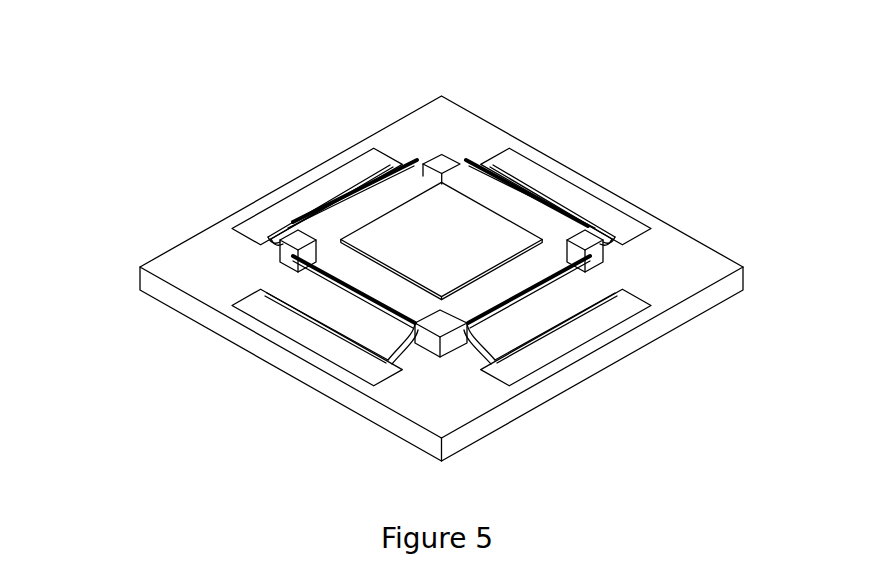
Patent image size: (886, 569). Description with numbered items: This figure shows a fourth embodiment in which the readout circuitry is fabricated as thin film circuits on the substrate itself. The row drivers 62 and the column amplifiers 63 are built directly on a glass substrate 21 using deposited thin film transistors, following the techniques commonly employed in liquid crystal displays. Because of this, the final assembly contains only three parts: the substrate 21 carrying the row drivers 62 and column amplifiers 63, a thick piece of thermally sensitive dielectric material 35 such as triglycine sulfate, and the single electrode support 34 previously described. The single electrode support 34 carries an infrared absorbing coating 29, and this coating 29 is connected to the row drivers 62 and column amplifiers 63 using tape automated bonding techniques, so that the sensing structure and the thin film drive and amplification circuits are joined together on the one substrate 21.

The glass substrate 21 is at (215, 248).
The infrared absorbing coating 29 is at (442, 204).
The single electrode support 34 is at (467, 167).
The thermally sensitive dielectric material 35 is at (447, 340).
The row drivers 62 is at (263, 310).
The column amplifiers 63 is at (322, 184).